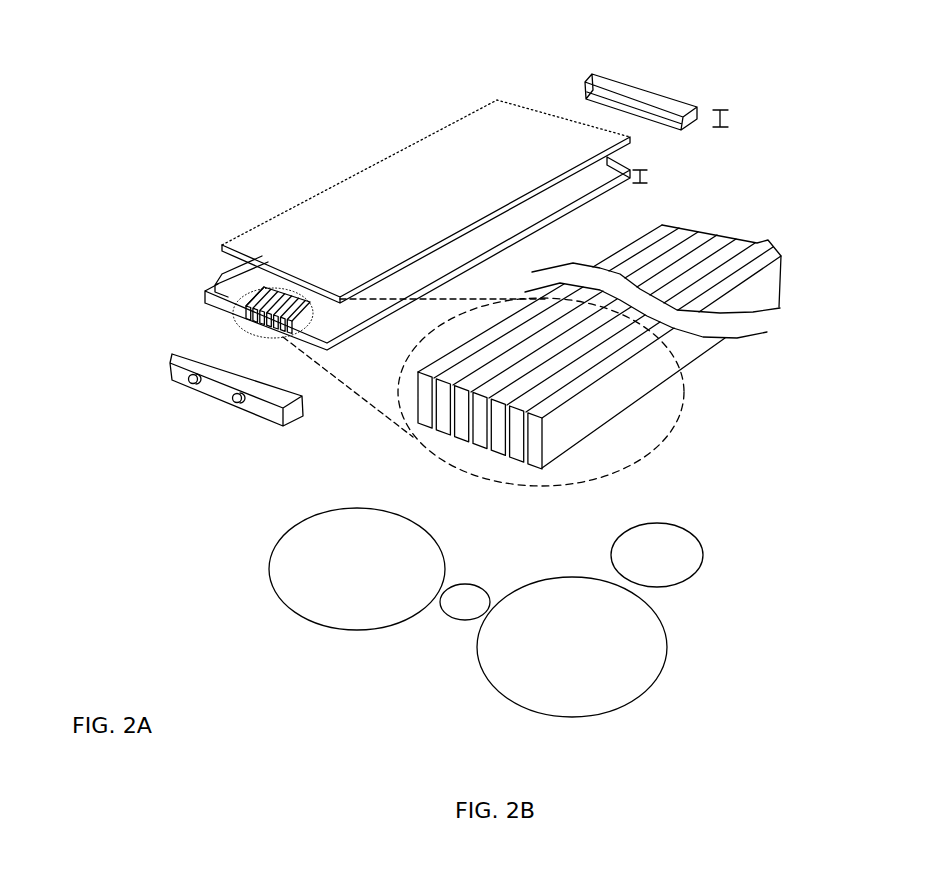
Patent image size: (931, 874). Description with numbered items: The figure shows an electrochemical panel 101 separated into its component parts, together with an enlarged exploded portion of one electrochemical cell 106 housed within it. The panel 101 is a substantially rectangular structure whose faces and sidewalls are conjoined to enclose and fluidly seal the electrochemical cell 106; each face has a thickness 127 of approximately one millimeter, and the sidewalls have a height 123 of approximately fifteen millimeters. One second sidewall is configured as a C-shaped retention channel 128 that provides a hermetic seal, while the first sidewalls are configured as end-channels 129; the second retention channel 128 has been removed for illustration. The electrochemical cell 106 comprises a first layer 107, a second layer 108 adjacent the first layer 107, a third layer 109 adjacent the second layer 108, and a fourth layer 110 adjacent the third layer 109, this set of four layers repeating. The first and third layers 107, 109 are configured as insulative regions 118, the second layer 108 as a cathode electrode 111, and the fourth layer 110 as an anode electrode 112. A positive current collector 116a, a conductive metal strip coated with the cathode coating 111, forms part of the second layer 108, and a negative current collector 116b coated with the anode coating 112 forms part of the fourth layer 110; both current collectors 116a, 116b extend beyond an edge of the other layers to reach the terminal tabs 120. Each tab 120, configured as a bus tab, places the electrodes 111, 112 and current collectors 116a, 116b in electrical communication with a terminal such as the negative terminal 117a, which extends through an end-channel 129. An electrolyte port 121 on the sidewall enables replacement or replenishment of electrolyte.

In FIG. 2A, the electrochemical panel 101 is at (249, 182).
In FIG. 2A, the electrochemical cell 106 is at (250, 279).
In FIG. 2A, the first layer 107 is at (303, 317).
In FIG. 2B, the first layer 107 is at (700, 571).
In FIG. 2A, the second layer 108 is at (296, 316).
In FIG. 2B, the second layer 108 is at (665, 655).
In FIG. 2A, the third layer 109 is at (289, 314).
In FIG. 2B, the third layer 109 is at (457, 622).
In FIG. 2A, the fourth layer 110 is at (283, 313).
In FIG. 2B, the fourth layer 110 is at (357, 630).
In FIG. 2B, the cathode electrode 111 is at (516, 442).
In FIG. 2B, the anode electrode 112 is at (430, 432).
In FIG. 2B, the positive current collector 116a is at (499, 436).
In FIG. 2B, the negative current collector 116b is at (447, 428).
In FIG. 2A, the negative terminal 117a is at (186, 381).
In FIG. 2B, the insulative region 118 is at (422, 410).
In FIG. 2A, the terminal tab 120 is at (648, 117).
In FIG. 2A, the electrolyte port 121 is at (232, 401).
In FIG. 2A, the height 123 is at (727, 113).
In FIG. 2A, the thickness 127 is at (650, 173).
In FIG. 2A, the retention channel 128 is at (210, 288).
In FIG. 2A, the end-channel 129 is at (205, 357).